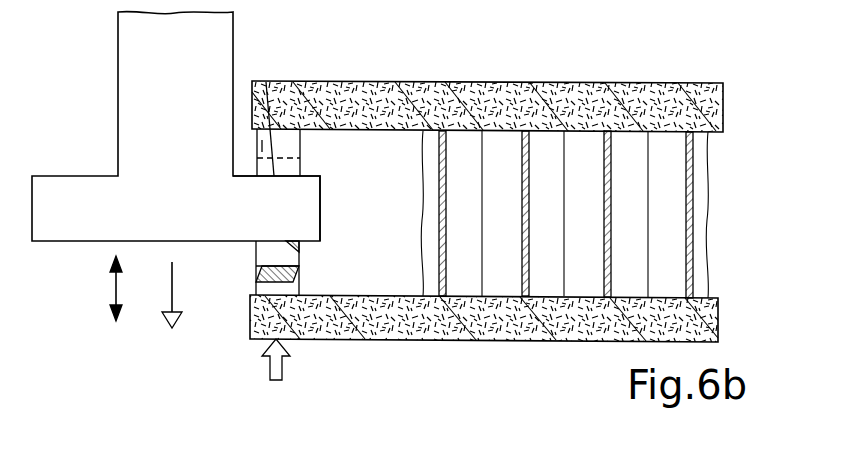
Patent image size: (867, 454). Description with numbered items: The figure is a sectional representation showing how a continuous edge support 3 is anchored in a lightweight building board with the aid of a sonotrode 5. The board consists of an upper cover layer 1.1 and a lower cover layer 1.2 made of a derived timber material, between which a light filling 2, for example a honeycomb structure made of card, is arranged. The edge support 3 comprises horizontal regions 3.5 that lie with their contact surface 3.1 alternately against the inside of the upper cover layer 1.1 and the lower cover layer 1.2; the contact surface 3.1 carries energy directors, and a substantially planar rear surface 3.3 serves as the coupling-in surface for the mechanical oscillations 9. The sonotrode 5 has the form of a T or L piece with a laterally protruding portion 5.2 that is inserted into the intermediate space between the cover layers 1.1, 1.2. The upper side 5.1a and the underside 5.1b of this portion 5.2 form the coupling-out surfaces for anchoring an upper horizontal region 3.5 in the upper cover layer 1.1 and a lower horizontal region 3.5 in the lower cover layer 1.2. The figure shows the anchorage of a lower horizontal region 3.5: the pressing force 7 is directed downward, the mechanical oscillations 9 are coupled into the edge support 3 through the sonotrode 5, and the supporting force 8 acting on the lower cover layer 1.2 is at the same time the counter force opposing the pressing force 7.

The upper cover layer 1.1 is at (722, 108).
The lower cover layer 1.2 is at (718, 318).
The filling 2 is at (673, 212).
The edge support 3 is at (303, 163).
The contact surface 3.1 is at (277, 296).
The rear surface 3.3 is at (276, 262).
The horizontal regions 3.5 is at (262, 146).
The sonotrode 5 is at (144, 56).
The upper side 5.1a is at (267, 82).
The underside 5.1b is at (300, 254).
The laterally protruding portion 5.2 is at (302, 207).
The pressing force 7 is at (168, 290).
The supporting force 8 is at (285, 372).
The mechanical oscillations 9 is at (112, 288).